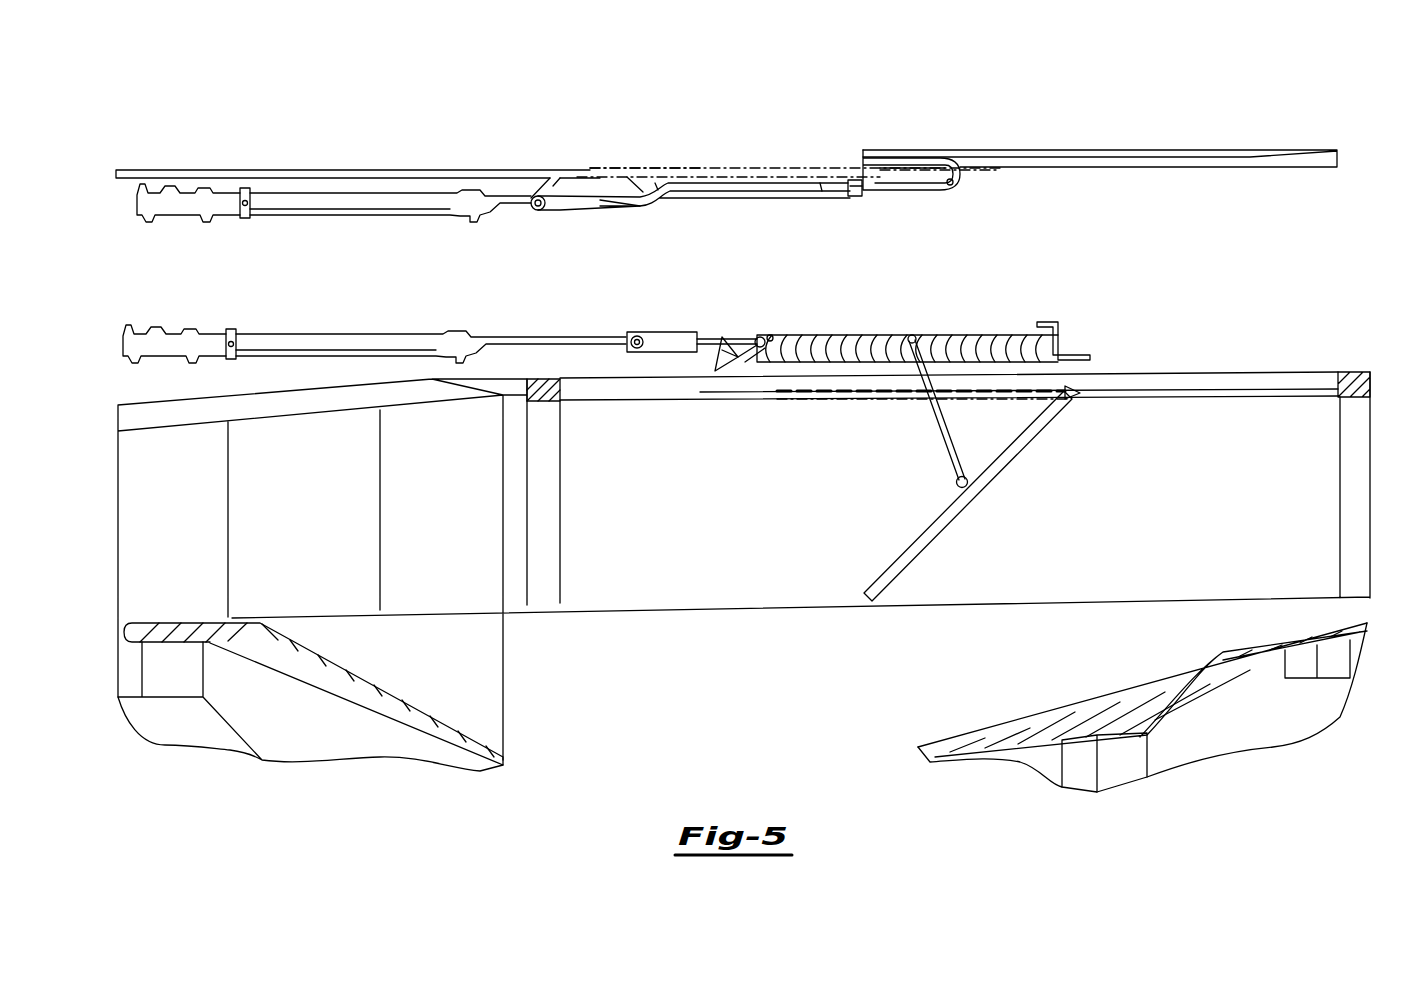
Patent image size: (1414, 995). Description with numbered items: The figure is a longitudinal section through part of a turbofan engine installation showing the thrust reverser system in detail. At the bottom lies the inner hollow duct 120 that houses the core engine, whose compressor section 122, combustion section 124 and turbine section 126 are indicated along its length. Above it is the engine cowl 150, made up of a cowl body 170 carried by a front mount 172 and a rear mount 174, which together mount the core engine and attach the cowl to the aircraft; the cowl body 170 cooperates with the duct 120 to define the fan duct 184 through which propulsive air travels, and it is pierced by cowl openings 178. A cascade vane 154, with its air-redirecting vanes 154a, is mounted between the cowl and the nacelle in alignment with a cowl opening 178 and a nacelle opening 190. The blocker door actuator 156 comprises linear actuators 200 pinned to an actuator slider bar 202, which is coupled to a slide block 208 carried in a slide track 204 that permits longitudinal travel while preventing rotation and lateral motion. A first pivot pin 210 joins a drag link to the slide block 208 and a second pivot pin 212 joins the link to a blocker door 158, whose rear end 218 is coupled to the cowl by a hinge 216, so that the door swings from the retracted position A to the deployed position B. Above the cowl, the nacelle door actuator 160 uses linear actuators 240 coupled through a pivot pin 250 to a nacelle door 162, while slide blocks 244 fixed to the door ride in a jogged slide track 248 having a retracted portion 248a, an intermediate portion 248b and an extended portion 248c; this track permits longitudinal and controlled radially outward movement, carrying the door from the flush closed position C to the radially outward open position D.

The inner hollow duct 120 is at (612, 592).
The compressor section 122 is at (418, 700).
The combustion section 124 is at (962, 740).
The turbine section 126 is at (1298, 630).
The engine cowl 150 is at (1316, 375).
The cascade vanes 154 is at (995, 278).
The vanes 154a is at (758, 356).
The blocker door actuator 156 is at (293, 365).
The blocker doors 158 is at (935, 528).
The nacelle door actuator 160 is at (283, 184).
The nacelle doors 162 is at (1122, 151).
The cowl body 170 is at (1282, 382).
The front mount 172 is at (552, 518).
The rear mount 174 is at (1352, 515).
The cowl openings 178 is at (852, 410).
The fan duct 184 is at (750, 508).
The nacelle opening 190 is at (568, 162).
The linear actuators 200 is at (317, 335).
The actuator slider bars 202 is at (665, 333).
The slide tracks 204 is at (838, 337).
The slide block 208 is at (753, 343).
The first pivot pin 210 is at (760, 338).
The second pivot pin 212 is at (956, 483).
The hinge 216 is at (1078, 385).
The rear end 218 is at (1072, 400).
The linear actuators 240 is at (272, 205).
The slide blocks 244 is at (906, 160).
The slide tracks 248 is at (688, 197).
The retracted portion 248a is at (603, 207).
The intermediate portion 248b is at (655, 185).
The extended portion 248c is at (822, 185).
The pivot pin 250 is at (862, 192).
The retracted position A is at (1023, 358).
The deployed position B is at (1003, 452).
The closed position C is at (697, 165).
The open position D is at (1040, 150).